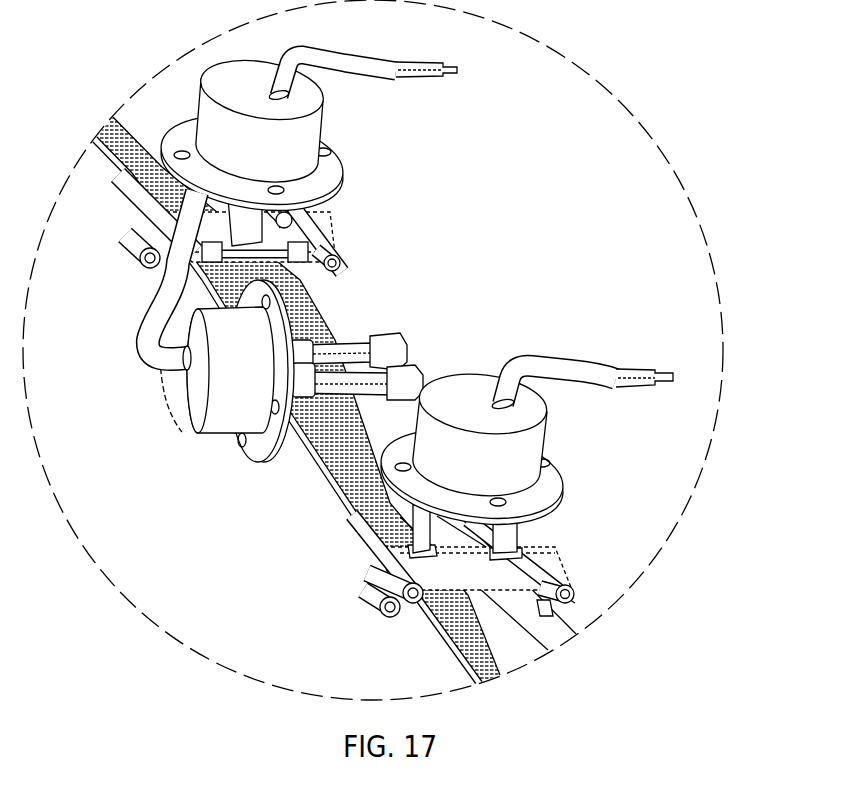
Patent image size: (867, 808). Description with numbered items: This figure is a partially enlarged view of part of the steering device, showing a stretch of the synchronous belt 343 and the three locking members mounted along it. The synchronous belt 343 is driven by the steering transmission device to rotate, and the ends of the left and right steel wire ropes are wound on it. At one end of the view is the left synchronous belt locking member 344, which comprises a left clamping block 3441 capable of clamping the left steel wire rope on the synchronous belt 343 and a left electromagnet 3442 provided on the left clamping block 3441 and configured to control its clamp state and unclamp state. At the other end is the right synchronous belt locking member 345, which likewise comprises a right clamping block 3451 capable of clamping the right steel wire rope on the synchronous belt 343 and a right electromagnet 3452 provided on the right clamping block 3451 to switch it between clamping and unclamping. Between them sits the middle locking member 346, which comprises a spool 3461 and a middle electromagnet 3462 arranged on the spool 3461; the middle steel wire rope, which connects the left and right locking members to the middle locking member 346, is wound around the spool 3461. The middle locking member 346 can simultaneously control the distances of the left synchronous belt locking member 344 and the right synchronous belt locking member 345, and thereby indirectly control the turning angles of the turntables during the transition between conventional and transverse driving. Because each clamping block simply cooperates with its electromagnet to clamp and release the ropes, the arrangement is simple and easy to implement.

The synchronous belt 343 is at (280, 389).
The left synchronous belt locking member 344 is at (375, 587).
The left clamping block 3441 is at (415, 621).
The left electromagnet 3442 is at (408, 549).
The right synchronous belt locking member 345 is at (332, 162).
The right clamping block 3451 is at (290, 221).
The right electromagnet 3452 is at (465, 207).
The middle locking member 346 is at (451, 311).
The spool 3461 is at (409, 350).
The middle electromagnet 3462 is at (410, 296).